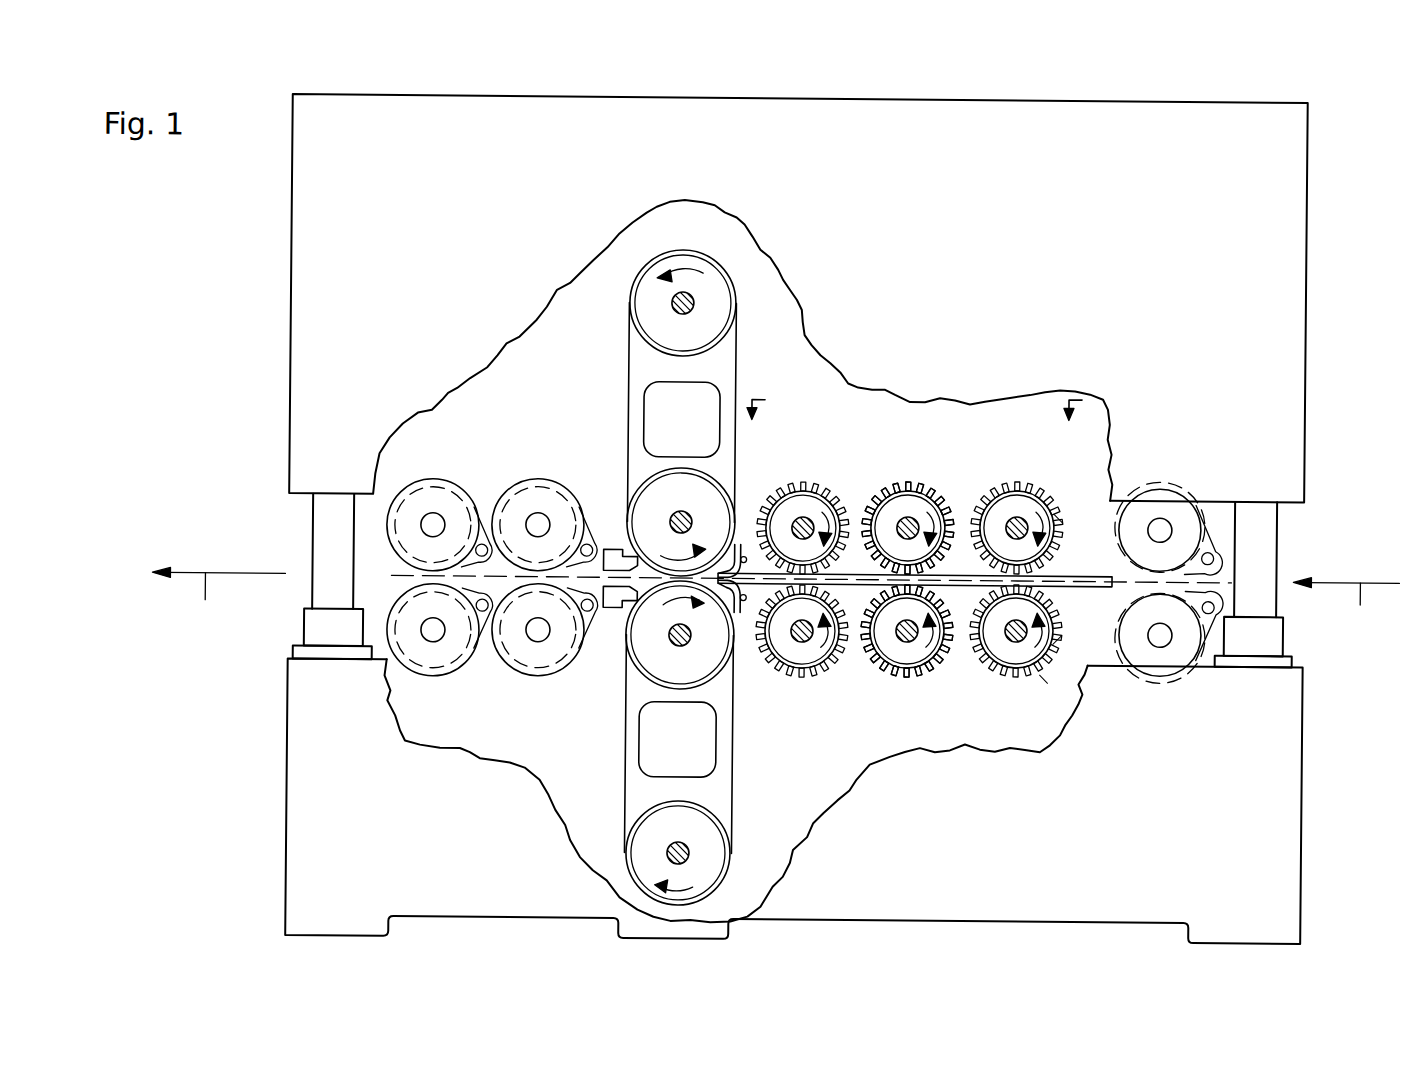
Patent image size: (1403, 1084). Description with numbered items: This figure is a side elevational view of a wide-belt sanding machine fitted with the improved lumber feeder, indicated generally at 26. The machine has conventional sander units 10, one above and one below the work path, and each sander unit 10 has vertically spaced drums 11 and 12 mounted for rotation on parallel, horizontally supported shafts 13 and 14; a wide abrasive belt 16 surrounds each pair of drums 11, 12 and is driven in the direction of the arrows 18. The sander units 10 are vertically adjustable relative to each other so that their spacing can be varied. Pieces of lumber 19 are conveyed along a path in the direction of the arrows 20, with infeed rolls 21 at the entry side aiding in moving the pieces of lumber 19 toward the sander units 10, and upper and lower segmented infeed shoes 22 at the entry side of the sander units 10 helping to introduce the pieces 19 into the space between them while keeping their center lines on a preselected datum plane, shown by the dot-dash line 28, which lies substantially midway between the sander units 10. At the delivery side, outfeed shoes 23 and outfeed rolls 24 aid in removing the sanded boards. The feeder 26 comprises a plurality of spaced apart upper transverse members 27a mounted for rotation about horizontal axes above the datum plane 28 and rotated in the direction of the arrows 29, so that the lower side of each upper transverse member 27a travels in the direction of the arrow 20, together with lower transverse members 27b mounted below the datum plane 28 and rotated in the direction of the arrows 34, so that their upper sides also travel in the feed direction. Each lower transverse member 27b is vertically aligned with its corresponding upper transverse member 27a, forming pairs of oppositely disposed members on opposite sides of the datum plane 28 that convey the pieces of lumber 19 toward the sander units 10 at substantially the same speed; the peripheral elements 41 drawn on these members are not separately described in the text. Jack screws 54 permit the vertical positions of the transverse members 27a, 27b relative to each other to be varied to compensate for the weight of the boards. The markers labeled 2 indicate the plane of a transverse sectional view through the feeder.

The section line II-II 2 is at (913, 425).
The sander unit 10 is at (616, 402).
The drum 11 is at (725, 304).
The drum 12 is at (665, 491).
The shaft 13 is at (670, 303).
The shaft 14 is at (672, 521).
The abrasive belt 16 is at (628, 351).
The arrows 18 is at (683, 269).
The pieces of lumber 19 is at (1089, 584).
The arrows 20 is at (776, 606).
The infeed rolls 21 is at (1175, 509).
The infeed shoes 22 is at (740, 547).
The outfeed shoes 23 is at (613, 551).
The outfeed rolls 24 is at (419, 490).
The feeding apparatus 26 is at (1050, 688).
The upper transverse members 27a is at (802, 481).
The lower transverse members 27b is at (805, 680).
The datum plane 28 is at (1134, 575).
The arrows 29 is at (1058, 516).
The arrows 34 is at (1059, 638).
The teeth 41 is at (864, 516).
The jack screws 54 is at (318, 536).